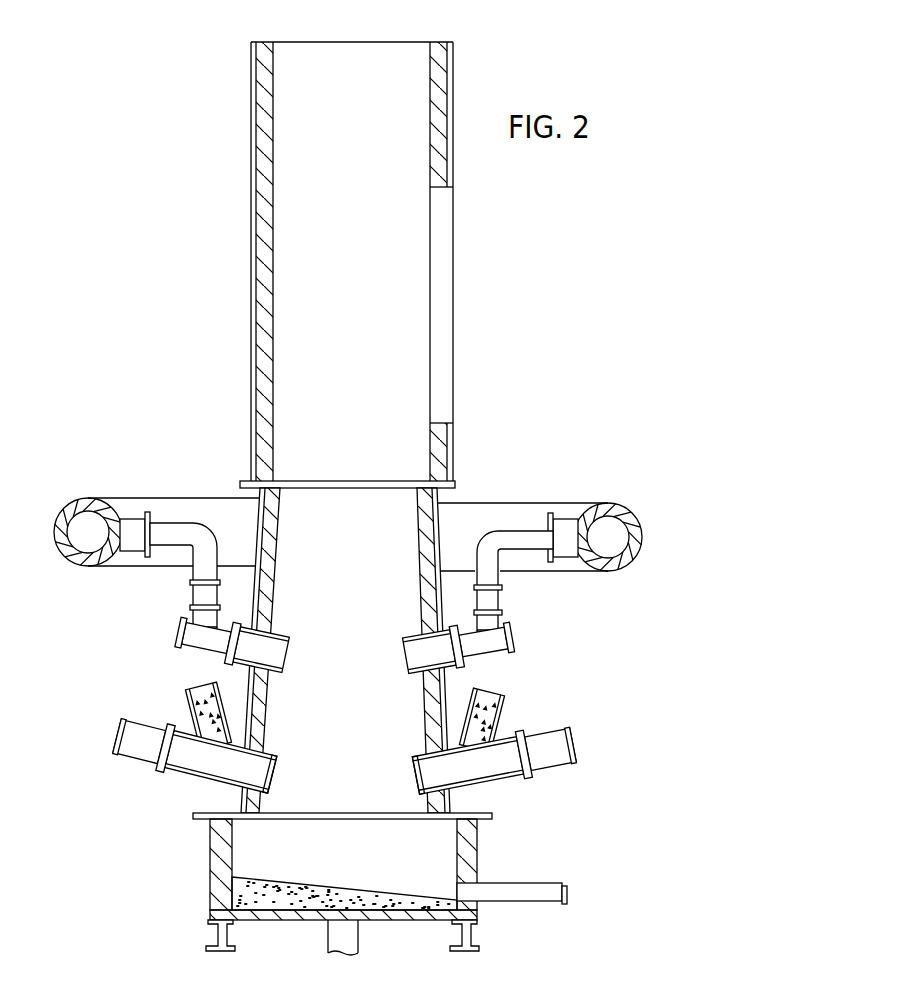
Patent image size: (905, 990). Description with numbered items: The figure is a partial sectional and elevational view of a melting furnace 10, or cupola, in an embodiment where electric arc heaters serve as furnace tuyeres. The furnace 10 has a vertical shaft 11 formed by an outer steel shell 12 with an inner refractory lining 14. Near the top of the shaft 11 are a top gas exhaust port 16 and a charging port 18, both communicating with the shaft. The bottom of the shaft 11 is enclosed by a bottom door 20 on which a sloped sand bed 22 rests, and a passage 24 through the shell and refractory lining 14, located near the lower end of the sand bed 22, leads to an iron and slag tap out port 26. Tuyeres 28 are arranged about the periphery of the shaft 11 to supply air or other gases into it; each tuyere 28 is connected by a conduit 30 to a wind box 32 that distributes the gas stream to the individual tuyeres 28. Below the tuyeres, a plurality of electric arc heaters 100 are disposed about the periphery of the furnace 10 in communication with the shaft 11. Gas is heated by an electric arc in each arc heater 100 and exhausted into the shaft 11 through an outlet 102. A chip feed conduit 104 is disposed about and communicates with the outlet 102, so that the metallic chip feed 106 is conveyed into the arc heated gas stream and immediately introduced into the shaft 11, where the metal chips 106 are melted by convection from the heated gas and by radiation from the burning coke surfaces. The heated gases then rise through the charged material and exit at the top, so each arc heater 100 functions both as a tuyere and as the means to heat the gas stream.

The melting furnace 10 is at (515, 456).
The vertical shaft 11 is at (359, 266).
The outer steel shell 12 is at (251, 244).
The inner refractory lining 14 is at (273, 158).
The top gas exhaust port 16 is at (330, 40).
The charging port 18 is at (453, 229).
The bottom door 20 is at (291, 921).
The sloped sand bed 22 is at (315, 882).
The passage 24 is at (457, 883).
The iron and slag tap out port 26 is at (537, 883).
The tuyere 28 is at (286, 652).
The conduit 30 is at (210, 530).
The wind box 32 is at (70, 505).
The electric arc heater 100 is at (129, 757).
The outlet 102 is at (205, 779).
The chip feed conduit 104 is at (186, 701).
The metallic chip feed 106 is at (209, 691).